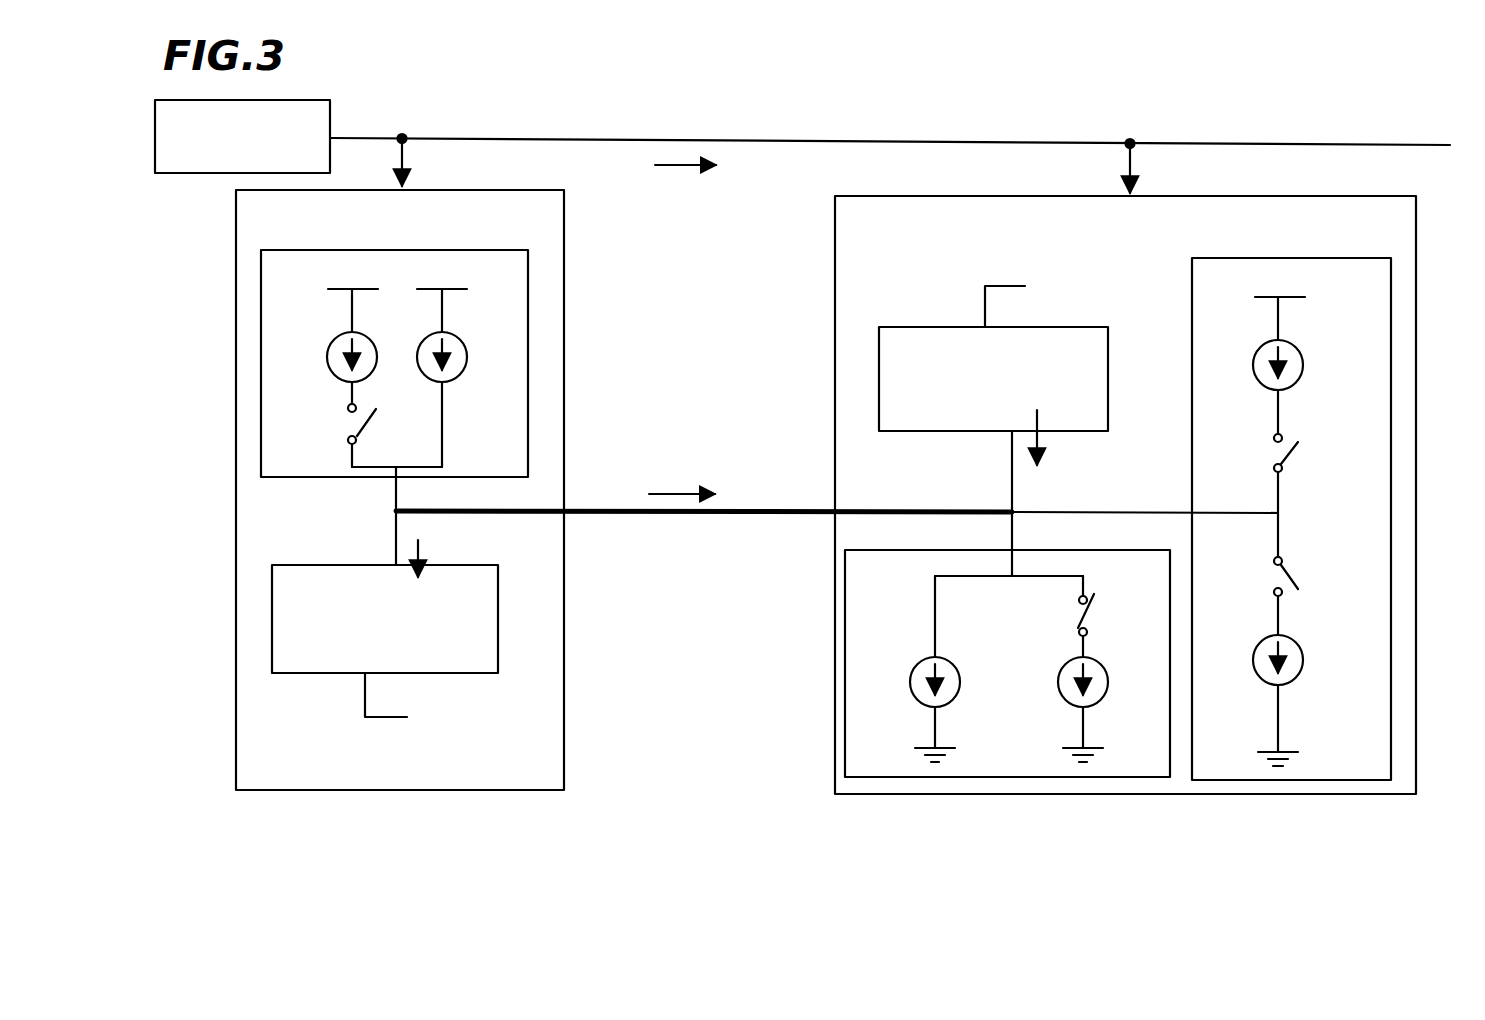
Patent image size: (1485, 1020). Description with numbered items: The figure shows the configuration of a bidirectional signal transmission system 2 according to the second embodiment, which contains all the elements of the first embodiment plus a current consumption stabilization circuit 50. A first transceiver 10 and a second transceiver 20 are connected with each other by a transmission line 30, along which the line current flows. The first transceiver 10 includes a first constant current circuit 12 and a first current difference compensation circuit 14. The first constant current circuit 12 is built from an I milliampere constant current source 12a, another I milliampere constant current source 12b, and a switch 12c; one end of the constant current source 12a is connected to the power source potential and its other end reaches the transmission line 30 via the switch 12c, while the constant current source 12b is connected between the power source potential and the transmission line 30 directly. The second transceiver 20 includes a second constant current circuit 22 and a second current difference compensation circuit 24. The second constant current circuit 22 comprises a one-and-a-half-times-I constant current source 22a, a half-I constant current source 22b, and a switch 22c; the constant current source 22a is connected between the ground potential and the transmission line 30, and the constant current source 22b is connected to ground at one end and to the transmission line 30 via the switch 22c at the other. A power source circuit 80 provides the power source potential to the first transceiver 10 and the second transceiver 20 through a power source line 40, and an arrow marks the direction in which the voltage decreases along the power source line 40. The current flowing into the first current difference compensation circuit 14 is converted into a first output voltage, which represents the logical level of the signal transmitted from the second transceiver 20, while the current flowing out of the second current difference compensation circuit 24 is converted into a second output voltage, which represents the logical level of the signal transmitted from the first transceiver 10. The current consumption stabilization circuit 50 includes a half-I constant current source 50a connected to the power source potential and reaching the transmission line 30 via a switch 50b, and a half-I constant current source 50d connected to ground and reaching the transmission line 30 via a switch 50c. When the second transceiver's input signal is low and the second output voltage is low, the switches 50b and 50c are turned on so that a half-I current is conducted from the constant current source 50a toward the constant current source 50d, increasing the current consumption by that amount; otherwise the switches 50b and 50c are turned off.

The bidirectional signal transmission system 2 is at (868, 840).
The first transceiver 10 is at (565, 325).
The first constant current circuit 12 is at (497, 250).
The constant current source 12a is at (327, 357).
The constant current source 12b is at (464, 348).
The switch 12c is at (370, 424).
The first current difference compensation circuit 14 is at (498, 615).
The second transceiver 20 is at (1418, 272).
The second constant current circuit 22 is at (1110, 550).
The constant current source 22a is at (912, 675).
The constant current source 22b is at (1106, 679).
The switch 22c is at (1068, 618).
The second current difference compensation circuit 24 is at (1108, 395).
The transmission line 30 is at (690, 514).
The power source line 40 is at (838, 140).
The current consumption stabilization circuit 50 is at (1190, 281).
The constant current source 50a is at (1303, 360).
The switch 50b is at (1291, 457).
The switch 50c is at (1292, 577).
The constant current source 50d is at (1301, 644).
The power source circuit 80 is at (332, 124).